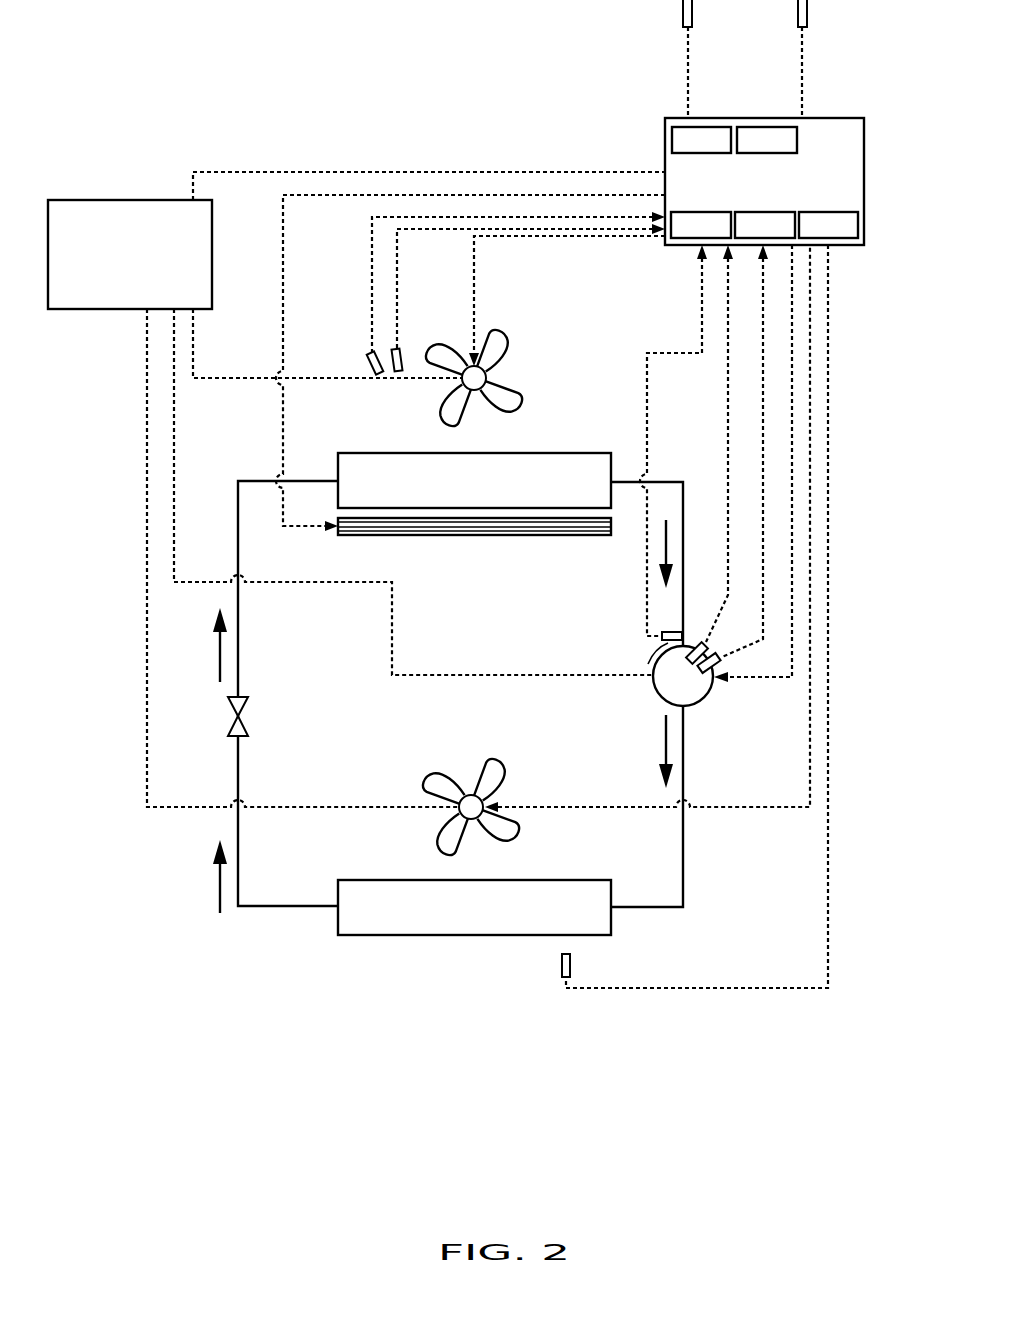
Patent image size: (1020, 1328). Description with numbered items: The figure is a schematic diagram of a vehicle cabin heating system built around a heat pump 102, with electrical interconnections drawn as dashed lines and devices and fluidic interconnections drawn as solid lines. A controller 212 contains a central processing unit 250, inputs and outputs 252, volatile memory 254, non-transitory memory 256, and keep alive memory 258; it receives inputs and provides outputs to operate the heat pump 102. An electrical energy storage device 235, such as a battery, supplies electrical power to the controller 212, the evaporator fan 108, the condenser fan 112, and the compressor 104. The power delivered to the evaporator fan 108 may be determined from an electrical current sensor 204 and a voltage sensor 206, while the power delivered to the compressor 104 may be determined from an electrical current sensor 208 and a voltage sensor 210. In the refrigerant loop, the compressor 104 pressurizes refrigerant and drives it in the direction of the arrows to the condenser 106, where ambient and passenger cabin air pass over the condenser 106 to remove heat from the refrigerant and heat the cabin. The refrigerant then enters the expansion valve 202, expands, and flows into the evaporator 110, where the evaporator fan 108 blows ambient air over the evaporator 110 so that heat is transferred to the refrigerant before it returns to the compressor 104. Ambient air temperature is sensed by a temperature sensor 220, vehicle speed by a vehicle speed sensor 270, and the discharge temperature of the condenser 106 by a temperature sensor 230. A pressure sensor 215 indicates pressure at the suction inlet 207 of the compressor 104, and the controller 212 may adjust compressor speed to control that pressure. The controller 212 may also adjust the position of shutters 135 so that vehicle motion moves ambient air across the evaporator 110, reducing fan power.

The heat pump 102 is at (127, 447).
The compressor 104 is at (658, 695).
The condenser 106 is at (484, 936).
The evaporator fan 108 is at (518, 412).
The evaporator 110 is at (397, 452).
The condenser fan 112 is at (518, 840).
The shutters 135 is at (471, 537).
The expansion valve 202 is at (242, 712).
The electrical current sensor 204 is at (370, 356).
The voltage sensor 206 is at (400, 350).
The suction inlet 207 is at (648, 664).
The electrical current sensor 208 is at (700, 640).
The voltage sensor 210 is at (714, 655).
The controller 212 is at (745, 194).
The pressure sensor 215 is at (660, 636).
The temperature sensor 220 is at (693, 29).
The temperature sensor 230 is at (560, 978).
The electrical energy storage device 235 is at (110, 269).
The central processing unit 250 is at (701, 140).
The inputs and outputs 252 is at (767, 140).
The volatile memory 254 is at (701, 225).
The non-transitory memory 256 is at (765, 225).
The keep alive memory 258 is at (828, 225).
The vehicle speed sensor 270 is at (807, 29).